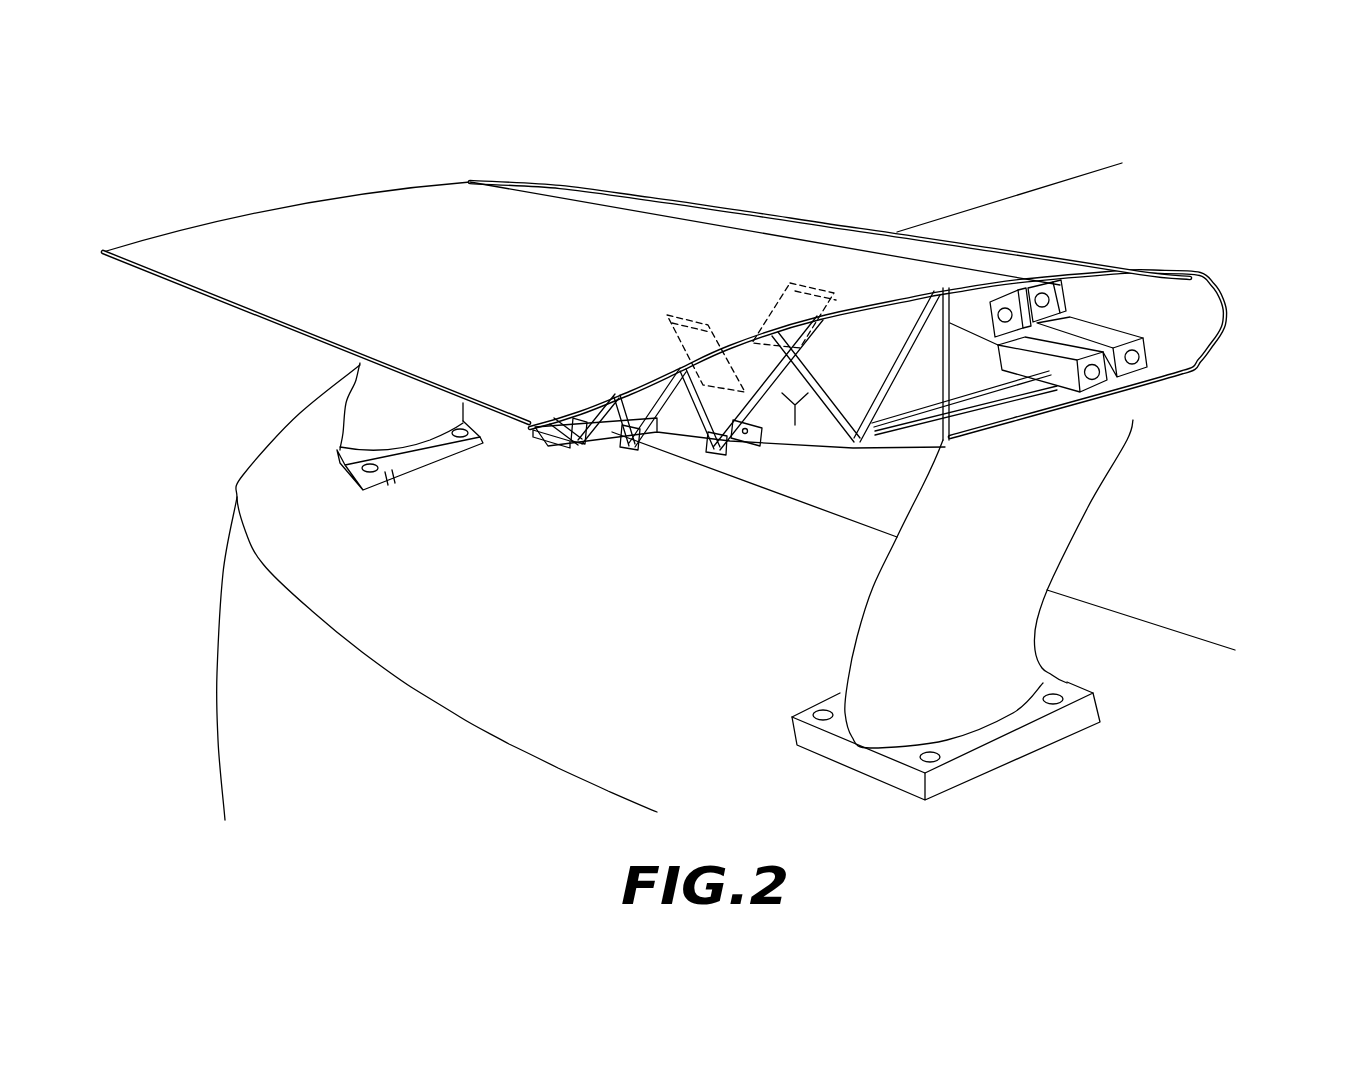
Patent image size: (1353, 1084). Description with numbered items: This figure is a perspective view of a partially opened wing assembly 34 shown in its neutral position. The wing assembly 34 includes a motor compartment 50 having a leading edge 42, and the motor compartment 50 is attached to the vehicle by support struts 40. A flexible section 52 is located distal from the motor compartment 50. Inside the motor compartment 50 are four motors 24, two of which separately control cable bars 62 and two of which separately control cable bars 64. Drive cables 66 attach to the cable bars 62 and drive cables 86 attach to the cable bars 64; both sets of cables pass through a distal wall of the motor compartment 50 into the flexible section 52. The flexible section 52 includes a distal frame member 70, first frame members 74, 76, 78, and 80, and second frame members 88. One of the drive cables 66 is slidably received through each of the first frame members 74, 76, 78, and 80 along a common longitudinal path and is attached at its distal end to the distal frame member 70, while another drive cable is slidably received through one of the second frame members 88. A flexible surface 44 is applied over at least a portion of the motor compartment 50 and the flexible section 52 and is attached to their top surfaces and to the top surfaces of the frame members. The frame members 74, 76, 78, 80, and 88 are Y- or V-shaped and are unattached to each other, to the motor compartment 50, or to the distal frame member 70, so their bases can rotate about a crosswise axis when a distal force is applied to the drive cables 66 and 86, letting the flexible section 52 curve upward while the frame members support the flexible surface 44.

The motor 24 is at (980, 305).
The wing assembly 34 is at (915, 157).
The support strut 40 is at (362, 423).
The leading edge 42 is at (738, 213).
The flexible surface 44 is at (395, 223).
The motor compartment 50 is at (1035, 399).
The flexible section 52 is at (906, 400).
The cable bar 62 is at (1143, 360).
The cable bar 64 is at (1108, 380).
The drive cable 66 is at (813, 437).
The distal frame member 70 is at (542, 430).
The first frame member 74 is at (830, 320).
The first frame member 76 is at (715, 450).
The first frame member 78 is at (633, 447).
The first frame member 80 is at (577, 443).
The drive cable 86 is at (795, 438).
The second frame member 88 is at (762, 433).